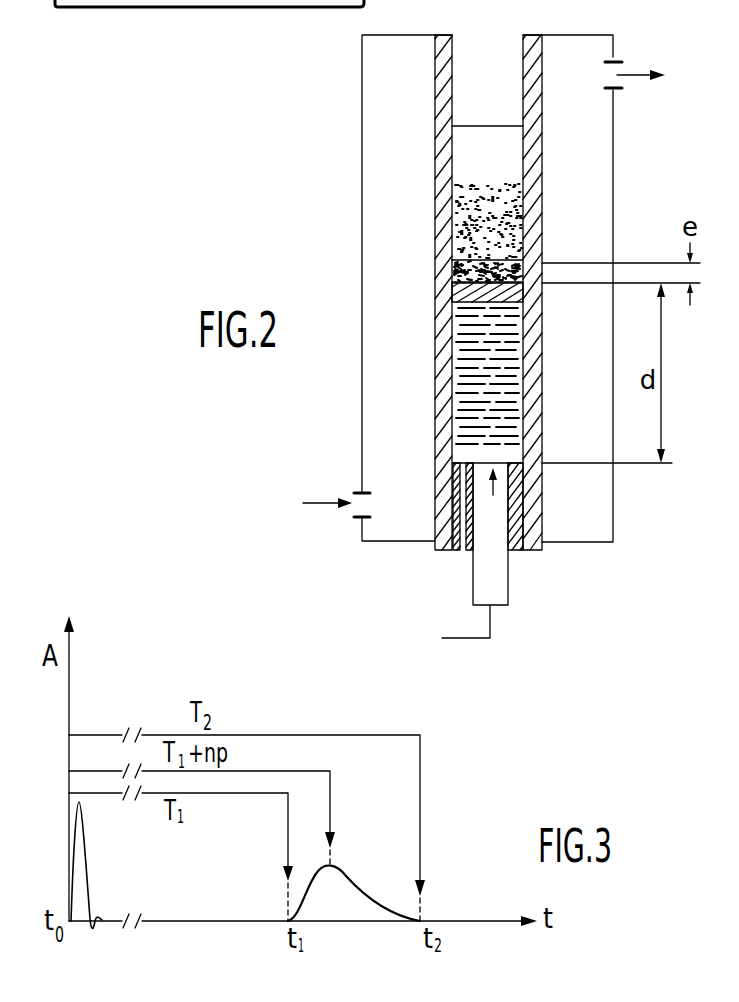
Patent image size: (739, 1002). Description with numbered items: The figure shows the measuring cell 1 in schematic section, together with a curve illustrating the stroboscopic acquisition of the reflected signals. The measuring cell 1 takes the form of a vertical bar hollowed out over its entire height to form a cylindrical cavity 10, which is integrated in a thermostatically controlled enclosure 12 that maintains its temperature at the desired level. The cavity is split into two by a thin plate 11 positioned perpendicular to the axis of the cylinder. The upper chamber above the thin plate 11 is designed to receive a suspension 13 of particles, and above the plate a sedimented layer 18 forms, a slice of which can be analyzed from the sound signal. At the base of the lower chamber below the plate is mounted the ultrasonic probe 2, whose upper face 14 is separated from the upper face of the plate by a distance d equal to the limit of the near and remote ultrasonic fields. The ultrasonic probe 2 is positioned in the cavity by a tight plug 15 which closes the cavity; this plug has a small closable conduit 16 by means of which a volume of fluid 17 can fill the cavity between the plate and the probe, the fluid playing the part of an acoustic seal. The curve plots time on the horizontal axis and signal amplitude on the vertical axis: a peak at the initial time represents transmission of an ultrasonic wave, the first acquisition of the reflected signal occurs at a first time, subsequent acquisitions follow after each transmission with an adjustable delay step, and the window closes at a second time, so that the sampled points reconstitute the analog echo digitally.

The measuring cell 1 is at (543, 29).
The ultrasonic probe 2 is at (492, 585).
The cylindrical cavity 10 is at (472, 74).
The thin plate 11 is at (468, 293).
The thermostatically controlled enclosure 12 is at (385, 418).
The suspension of particles 13 is at (470, 219).
The upper face of the probe 14 is at (492, 490).
The tight plug 15 is at (512, 552).
The small closable conduit 16 is at (462, 552).
The volume of fluid 17 is at (465, 380).
The sedimented layer 18 is at (455, 275).